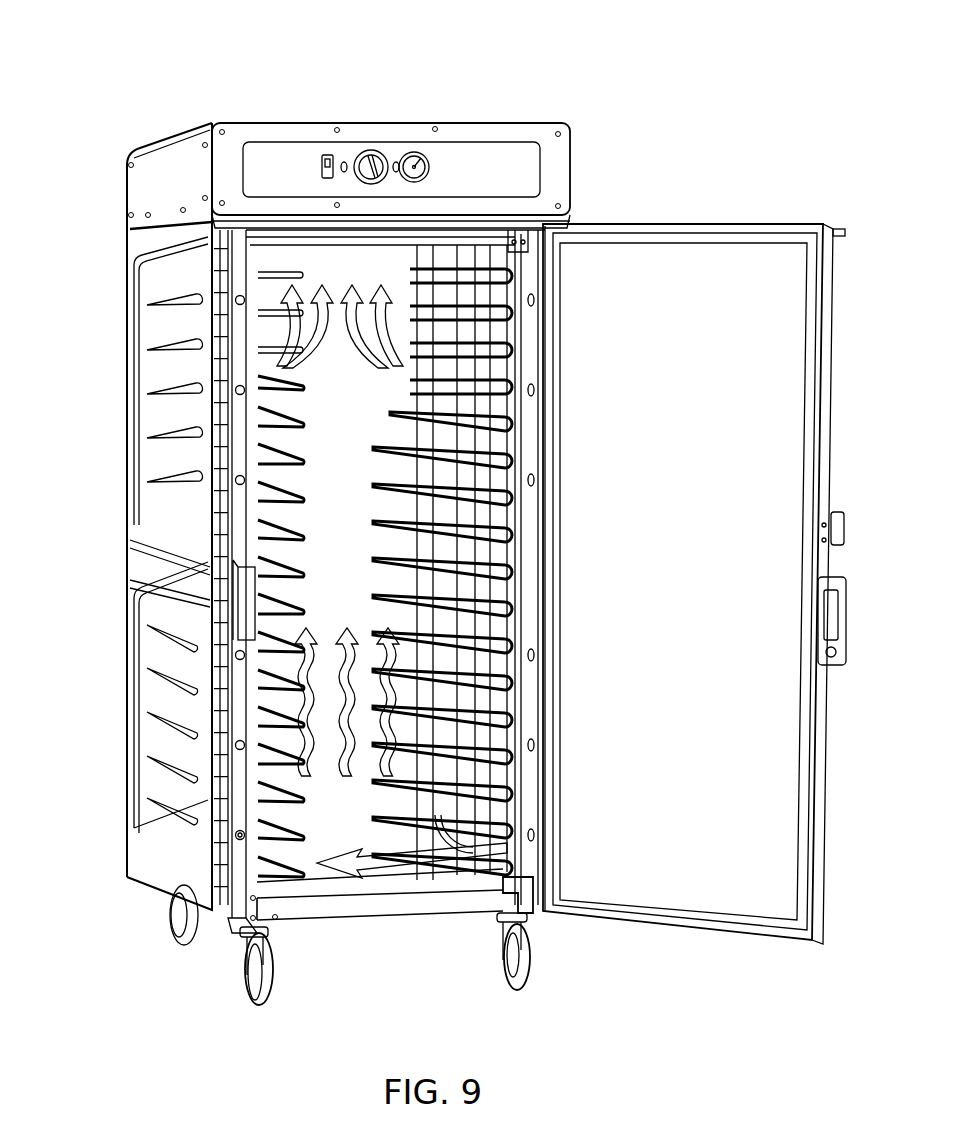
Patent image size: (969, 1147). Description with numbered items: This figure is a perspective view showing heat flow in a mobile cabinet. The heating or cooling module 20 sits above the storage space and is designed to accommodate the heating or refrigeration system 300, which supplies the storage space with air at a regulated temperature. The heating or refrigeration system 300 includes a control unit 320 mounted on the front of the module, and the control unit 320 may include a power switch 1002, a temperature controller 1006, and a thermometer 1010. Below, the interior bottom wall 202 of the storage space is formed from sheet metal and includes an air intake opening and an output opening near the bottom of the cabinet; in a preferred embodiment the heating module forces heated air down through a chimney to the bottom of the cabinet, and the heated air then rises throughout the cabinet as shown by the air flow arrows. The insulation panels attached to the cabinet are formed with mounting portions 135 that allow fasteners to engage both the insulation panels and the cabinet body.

The heating or cooling module 20 is at (127, 190).
The heating or refrigeration system 300 is at (522, 160).
The control unit 320 is at (371, 97).
The power switch 1002 is at (328, 152).
The temperature controller 1006 is at (369, 150).
The thermometer 1010 is at (413, 152).
The mounting portions 135 is at (238, 833).
The bottom wall 202 is at (318, 897).